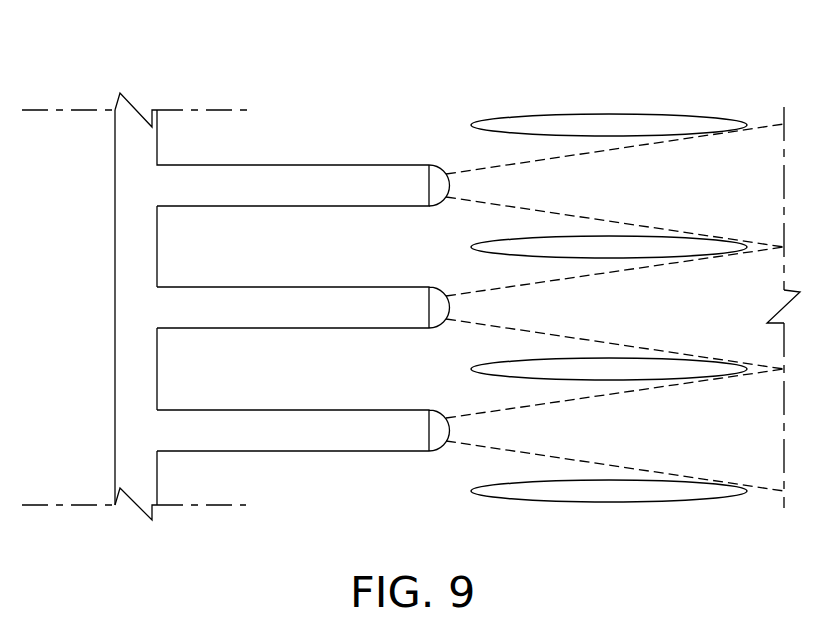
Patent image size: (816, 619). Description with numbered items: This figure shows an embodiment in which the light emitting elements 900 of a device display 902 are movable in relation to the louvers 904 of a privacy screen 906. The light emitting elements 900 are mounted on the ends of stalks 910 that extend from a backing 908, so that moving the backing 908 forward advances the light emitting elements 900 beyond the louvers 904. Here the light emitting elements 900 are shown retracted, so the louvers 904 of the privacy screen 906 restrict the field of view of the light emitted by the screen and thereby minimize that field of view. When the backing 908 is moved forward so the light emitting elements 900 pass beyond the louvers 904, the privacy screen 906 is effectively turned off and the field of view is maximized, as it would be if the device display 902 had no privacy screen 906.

The light emitting elements 900 is at (432, 168).
The device display 902 is at (108, 288).
The louvers 904 is at (607, 491).
The privacy screen 906 is at (409, 301).
The backing 908 is at (132, 481).
The stalks 910 is at (293, 451).